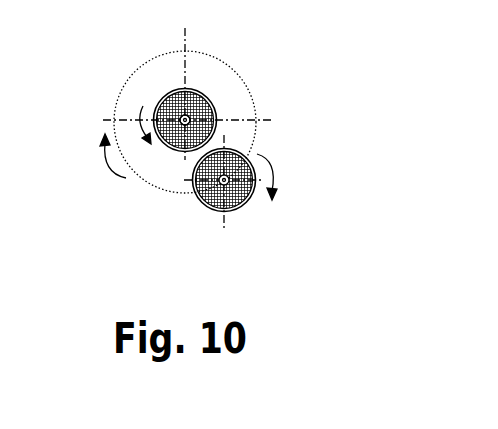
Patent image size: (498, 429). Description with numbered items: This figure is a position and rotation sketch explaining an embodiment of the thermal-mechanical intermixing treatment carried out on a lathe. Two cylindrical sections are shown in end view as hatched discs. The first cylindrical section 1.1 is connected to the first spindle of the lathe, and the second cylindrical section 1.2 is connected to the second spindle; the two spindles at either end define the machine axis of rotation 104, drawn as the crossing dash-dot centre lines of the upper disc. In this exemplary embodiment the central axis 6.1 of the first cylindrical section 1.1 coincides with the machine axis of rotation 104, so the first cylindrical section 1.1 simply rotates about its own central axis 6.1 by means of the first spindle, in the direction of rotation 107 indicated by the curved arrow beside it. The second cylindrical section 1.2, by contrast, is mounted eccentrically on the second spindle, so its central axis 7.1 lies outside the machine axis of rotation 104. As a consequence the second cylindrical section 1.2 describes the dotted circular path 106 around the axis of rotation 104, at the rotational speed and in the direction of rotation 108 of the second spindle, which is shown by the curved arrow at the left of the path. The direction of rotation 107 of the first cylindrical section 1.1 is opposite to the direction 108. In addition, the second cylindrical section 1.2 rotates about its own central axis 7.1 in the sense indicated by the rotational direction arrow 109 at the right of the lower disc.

The first cylindrical section 1.1 is at (210, 98).
The second cylindrical section 1.2 is at (207, 205).
The central axis of the first cylindrical section 6.1 is at (191, 118).
The machine axis of rotation 104 is at (230, 109).
The central axis of the second cylindrical section 7.1 is at (229, 185).
The circular path 106 is at (226, 59).
The direction of rotation of the first cylindrical section 107 is at (138, 114).
The direction of rotation of the second spindle 108 is at (102, 165).
The rotational direction arrow 109 is at (274, 175).